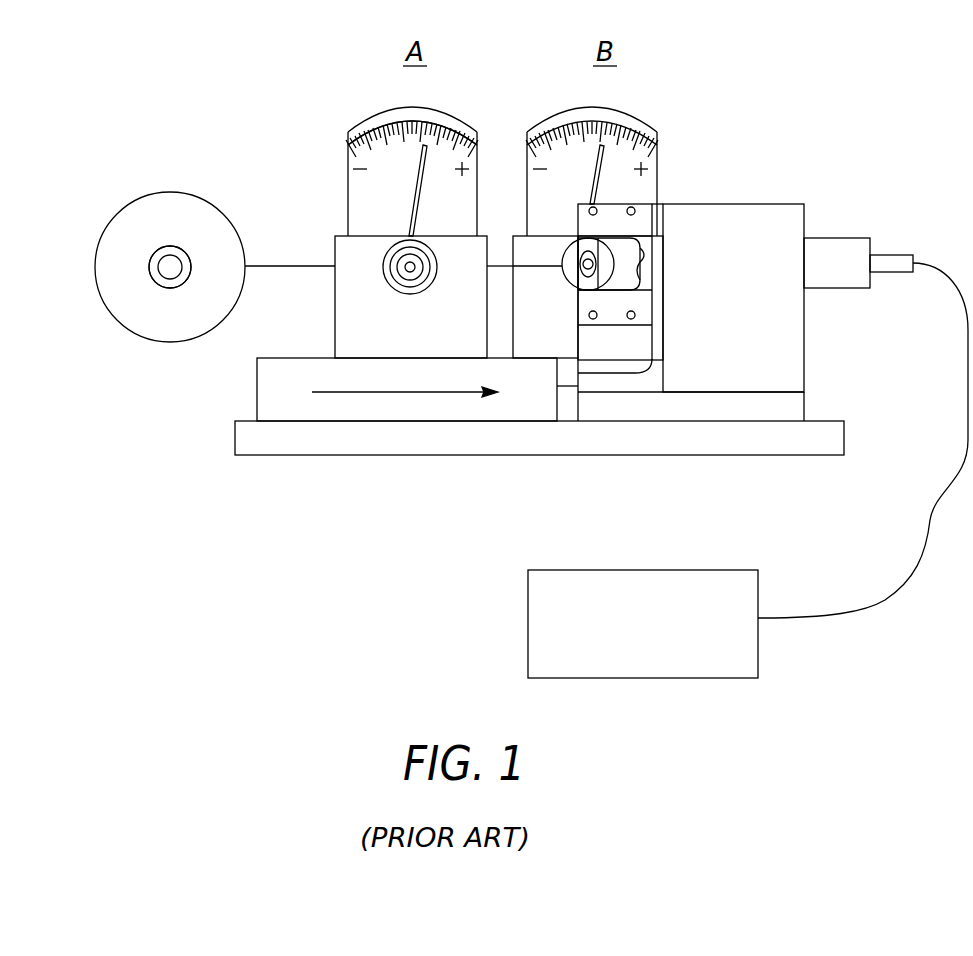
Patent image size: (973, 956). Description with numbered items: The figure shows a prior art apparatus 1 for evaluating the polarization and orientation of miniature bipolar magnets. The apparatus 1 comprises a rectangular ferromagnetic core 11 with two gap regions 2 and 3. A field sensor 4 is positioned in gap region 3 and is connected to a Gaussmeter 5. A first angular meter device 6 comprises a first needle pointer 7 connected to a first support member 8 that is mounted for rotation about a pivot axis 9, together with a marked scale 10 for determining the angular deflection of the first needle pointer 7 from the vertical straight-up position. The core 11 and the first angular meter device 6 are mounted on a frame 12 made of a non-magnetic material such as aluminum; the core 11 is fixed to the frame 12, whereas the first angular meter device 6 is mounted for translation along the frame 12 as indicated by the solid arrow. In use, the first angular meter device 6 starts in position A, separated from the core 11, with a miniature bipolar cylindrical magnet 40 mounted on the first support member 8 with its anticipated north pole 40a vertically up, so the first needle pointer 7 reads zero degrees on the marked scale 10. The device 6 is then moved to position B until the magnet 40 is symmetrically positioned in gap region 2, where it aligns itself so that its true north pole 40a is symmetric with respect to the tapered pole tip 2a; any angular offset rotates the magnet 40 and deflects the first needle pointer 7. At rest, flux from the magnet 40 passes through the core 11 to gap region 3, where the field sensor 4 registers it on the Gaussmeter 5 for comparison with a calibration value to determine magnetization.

The existing apparatus 1 is at (712, 115).
The gap region 2 is at (568, 272).
The tapered pole tip 2a is at (580, 242).
The gap region 3 is at (655, 262).
The field sensor 4 is at (650, 272).
The Gaussmeter 5 is at (560, 570).
The first angular meter device 6 is at (317, 207).
The first needle pointer 7 is at (460, 143).
The first support member 8 is at (392, 278).
The pivot axis 9 is at (410, 275).
The marked scale 10 is at (383, 130).
The rectangular ferromagnetic core 11 is at (648, 245).
The frame 12 is at (275, 470).
The miniature bipolar cylindrical magnet 40 is at (107, 312).
The north pole 40a is at (180, 178).